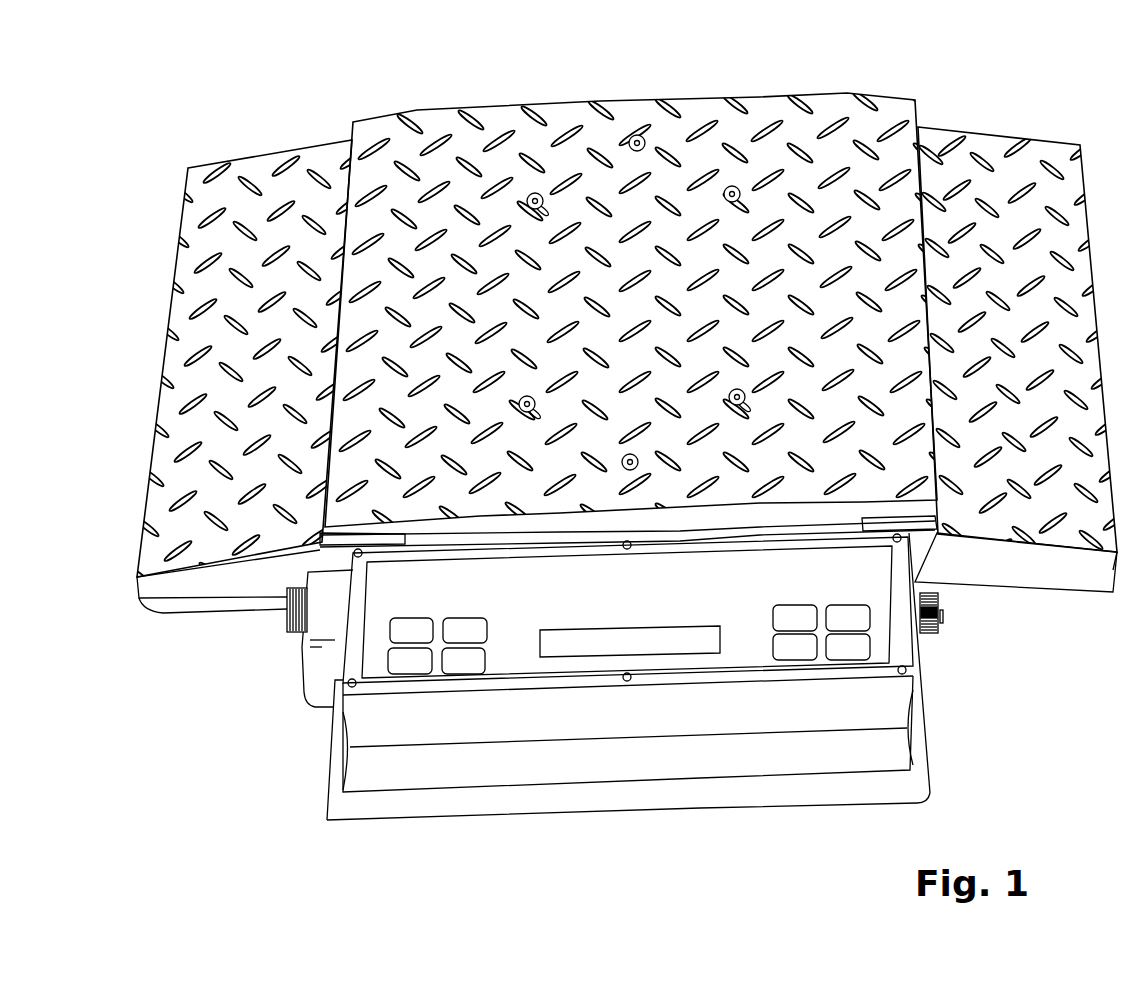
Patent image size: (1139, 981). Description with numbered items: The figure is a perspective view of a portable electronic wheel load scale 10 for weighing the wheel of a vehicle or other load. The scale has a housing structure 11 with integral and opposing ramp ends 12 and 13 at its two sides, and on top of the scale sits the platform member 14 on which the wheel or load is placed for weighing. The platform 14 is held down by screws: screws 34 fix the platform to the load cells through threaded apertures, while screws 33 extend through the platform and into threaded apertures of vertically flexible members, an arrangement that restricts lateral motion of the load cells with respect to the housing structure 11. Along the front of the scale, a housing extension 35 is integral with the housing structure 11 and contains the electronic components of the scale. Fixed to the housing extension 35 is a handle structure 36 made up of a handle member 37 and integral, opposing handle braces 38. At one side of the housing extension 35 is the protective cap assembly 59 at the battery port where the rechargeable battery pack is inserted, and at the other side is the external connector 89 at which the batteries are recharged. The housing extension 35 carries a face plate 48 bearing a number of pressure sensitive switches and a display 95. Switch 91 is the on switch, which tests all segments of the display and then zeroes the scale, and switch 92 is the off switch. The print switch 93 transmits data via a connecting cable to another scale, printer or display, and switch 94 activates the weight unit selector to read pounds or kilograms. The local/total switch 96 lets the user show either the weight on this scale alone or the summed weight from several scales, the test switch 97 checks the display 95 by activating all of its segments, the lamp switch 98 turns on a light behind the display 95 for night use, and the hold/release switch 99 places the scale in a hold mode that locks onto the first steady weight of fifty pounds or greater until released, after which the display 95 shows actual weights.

The wheel load scale 10 is at (910, 73).
The housing structure 11 is at (238, 585).
The ramp end 12 is at (253, 165).
The ramp end 13 is at (1052, 150).
The platform member 14 is at (443, 122).
The screws 33 is at (637, 135).
The screws 34 is at (732, 186).
The housing extension 35 is at (342, 688).
The handle structure 36 is at (947, 730).
The handle member 37 is at (627, 798).
The handle braces 38 is at (333, 760).
The face plate 48 is at (880, 637).
The protective cap assembly 59 is at (287, 657).
The external connector 89 is at (946, 637).
The on switch 91 is at (848, 618).
The off switch 92 is at (848, 647).
The print switch 93 is at (795, 618).
The weight unit selector switch 94 is at (795, 647).
The display 95 is at (630, 641).
The local/total switch 96 is at (465, 630).
The test switch 97 is at (463, 661).
The lamp switch 98 is at (411, 630).
The hold/release switch 99 is at (410, 661).